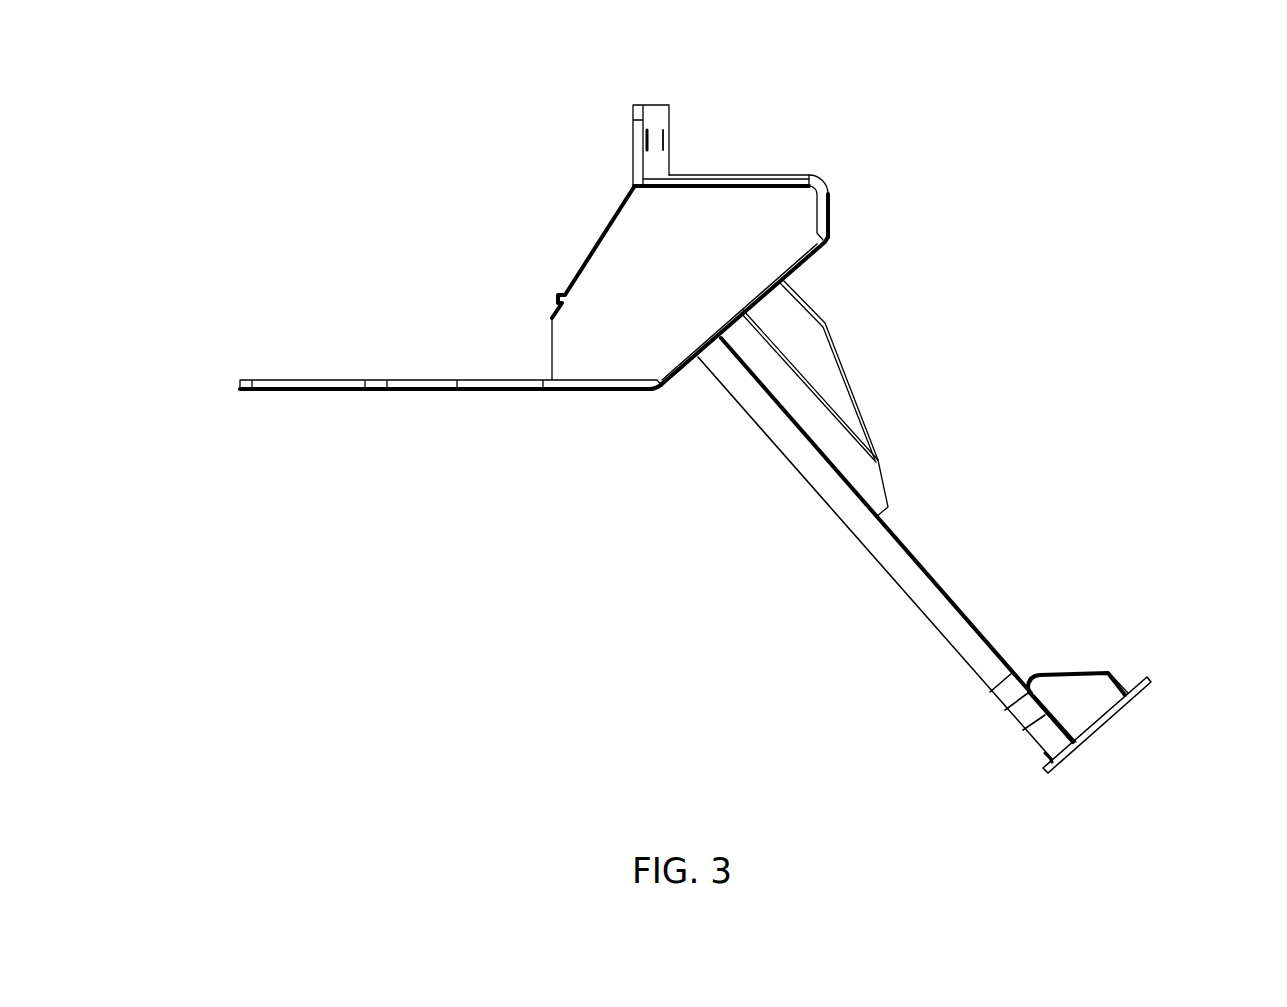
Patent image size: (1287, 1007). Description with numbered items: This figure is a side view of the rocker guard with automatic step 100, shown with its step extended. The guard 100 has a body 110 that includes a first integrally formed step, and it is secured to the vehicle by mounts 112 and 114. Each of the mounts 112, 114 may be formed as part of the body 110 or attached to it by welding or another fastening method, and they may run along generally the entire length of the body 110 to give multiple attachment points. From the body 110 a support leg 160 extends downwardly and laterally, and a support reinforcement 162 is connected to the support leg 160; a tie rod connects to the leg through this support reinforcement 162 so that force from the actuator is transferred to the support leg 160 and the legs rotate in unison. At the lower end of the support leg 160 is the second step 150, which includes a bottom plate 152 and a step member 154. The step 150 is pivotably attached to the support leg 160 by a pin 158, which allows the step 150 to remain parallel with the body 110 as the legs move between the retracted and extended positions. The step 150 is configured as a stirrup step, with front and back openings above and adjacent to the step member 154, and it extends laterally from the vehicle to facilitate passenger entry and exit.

The rocker guard with automatic step 100 is at (947, 98).
The body 110 is at (828, 215).
The mount 112 is at (358, 390).
The mount 114 is at (657, 110).
The second step 150 is at (1099, 667).
The bottom plate 152 is at (1108, 730).
The step member 154 is at (1072, 675).
The pin 158 is at (1030, 742).
The support leg 160 is at (900, 575).
The support reinforcement 162 is at (830, 370).